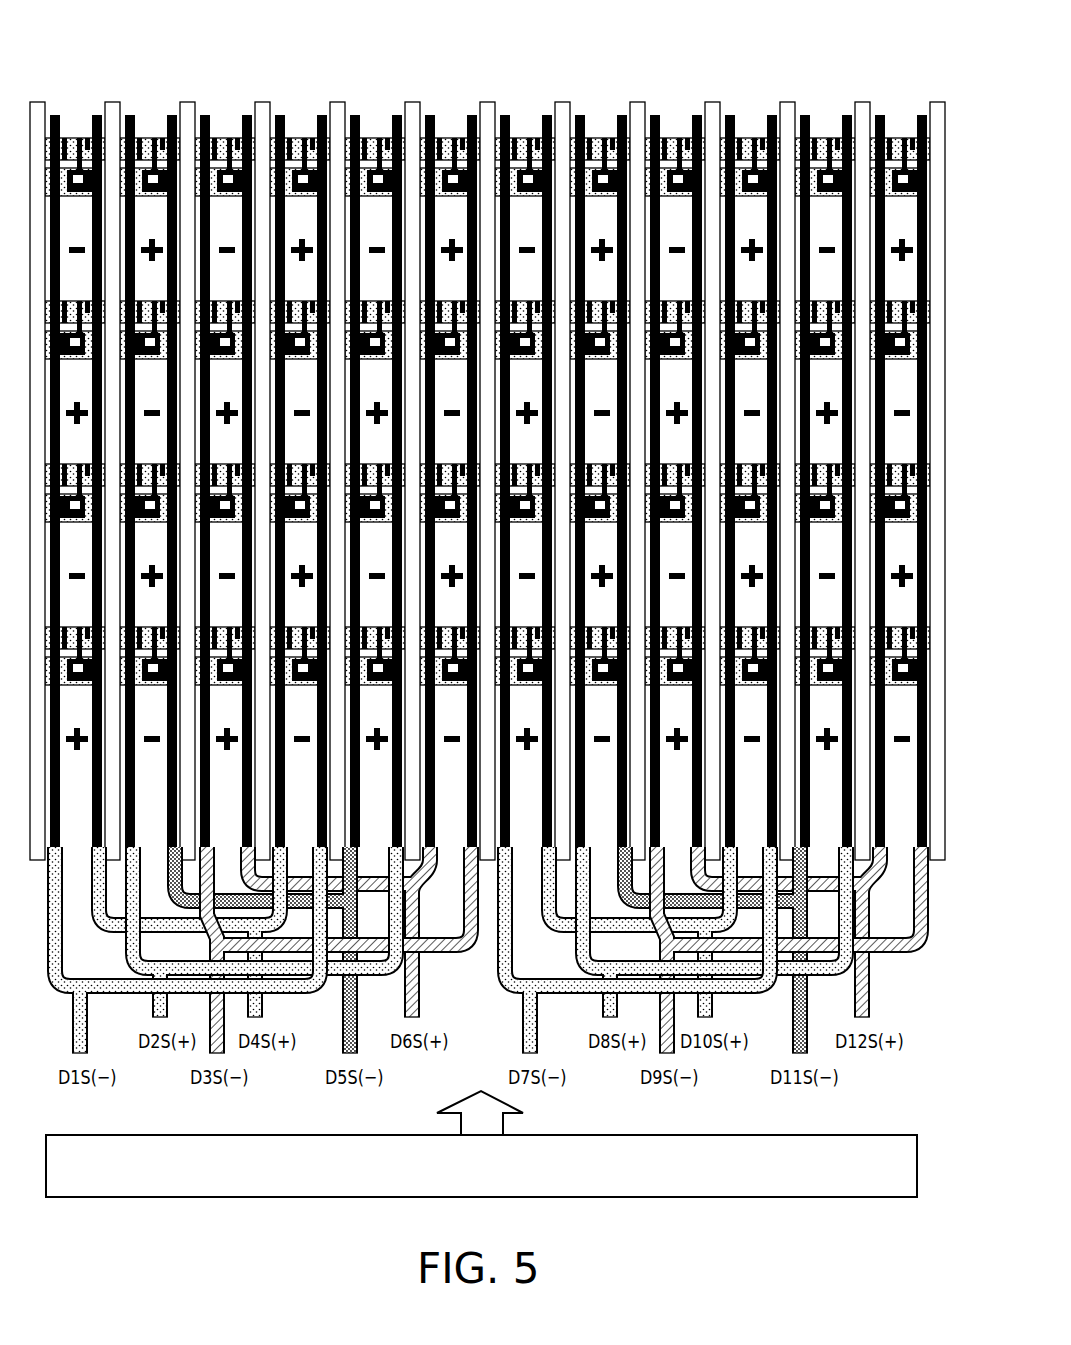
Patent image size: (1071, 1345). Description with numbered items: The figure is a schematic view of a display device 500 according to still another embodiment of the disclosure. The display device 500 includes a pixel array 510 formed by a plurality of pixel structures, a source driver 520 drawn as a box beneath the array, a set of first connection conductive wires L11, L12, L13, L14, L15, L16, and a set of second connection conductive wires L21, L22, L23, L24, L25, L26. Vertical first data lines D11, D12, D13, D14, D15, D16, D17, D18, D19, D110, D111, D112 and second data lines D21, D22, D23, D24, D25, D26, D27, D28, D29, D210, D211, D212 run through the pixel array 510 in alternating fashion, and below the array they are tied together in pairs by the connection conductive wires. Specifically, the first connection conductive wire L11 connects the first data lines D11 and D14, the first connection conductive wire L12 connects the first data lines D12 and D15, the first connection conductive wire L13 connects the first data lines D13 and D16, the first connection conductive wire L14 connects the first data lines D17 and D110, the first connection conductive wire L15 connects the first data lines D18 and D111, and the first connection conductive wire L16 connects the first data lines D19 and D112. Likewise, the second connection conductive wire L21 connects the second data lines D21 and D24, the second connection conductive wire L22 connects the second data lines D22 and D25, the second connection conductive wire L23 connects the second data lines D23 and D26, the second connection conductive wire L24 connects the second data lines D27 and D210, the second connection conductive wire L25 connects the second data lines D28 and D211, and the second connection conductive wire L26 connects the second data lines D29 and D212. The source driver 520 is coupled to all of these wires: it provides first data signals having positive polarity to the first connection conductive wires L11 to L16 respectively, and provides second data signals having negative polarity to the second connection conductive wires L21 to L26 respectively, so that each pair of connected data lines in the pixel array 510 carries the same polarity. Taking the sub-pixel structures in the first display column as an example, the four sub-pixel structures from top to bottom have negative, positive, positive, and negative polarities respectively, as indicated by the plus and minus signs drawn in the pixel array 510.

The display device 500 is at (924, 1238).
The pixel array 510 is at (868, 43).
The source driver 520 is at (845, 1134).
The first data line D11 is at (97, 114).
The first data line D12 is at (130, 114).
The first data line D13 is at (247, 114).
The first data line D14 is at (280, 114).
The first data line D15 is at (397, 114).
The first data line D16 is at (430, 114).
The first data line D17 is at (547, 114).
The first data line D18 is at (580, 114).
The first data line D19 is at (697, 114).
The first data line D110 is at (730, 114).
The first data line D111 is at (847, 114).
The first data line D112 is at (880, 114).
The second data line D21 is at (55, 114).
The second data line D22 is at (172, 114).
The second data line D23 is at (205, 114).
The second data line D24 is at (322, 114).
The second data line D25 is at (355, 114).
The second data line D26 is at (472, 114).
The second data line D27 is at (505, 114).
The second data line D28 is at (622, 114).
The second data line D29 is at (655, 114).
The second data line D210 is at (772, 114).
The second data line D211 is at (805, 114).
The second data line D212 is at (922, 114).
The first connection conductive wire L11 is at (108, 931).
The first connection conductive wire L12 is at (376, 973).
The first connection conductive wire L13 is at (427, 892).
The first connection conductive wire L14 is at (558, 931).
The first connection conductive wire L15 is at (826, 973).
The first connection conductive wire L16 is at (877, 892).
The second connection conductive wire L21 is at (302, 993).
The second connection conductive wire L22 is at (170, 909).
The second connection conductive wire L23 is at (433, 951).
The second connection conductive wire L24 is at (752, 993).
The second connection conductive wire L25 is at (620, 909).
The second connection conductive wire L26 is at (883, 951).